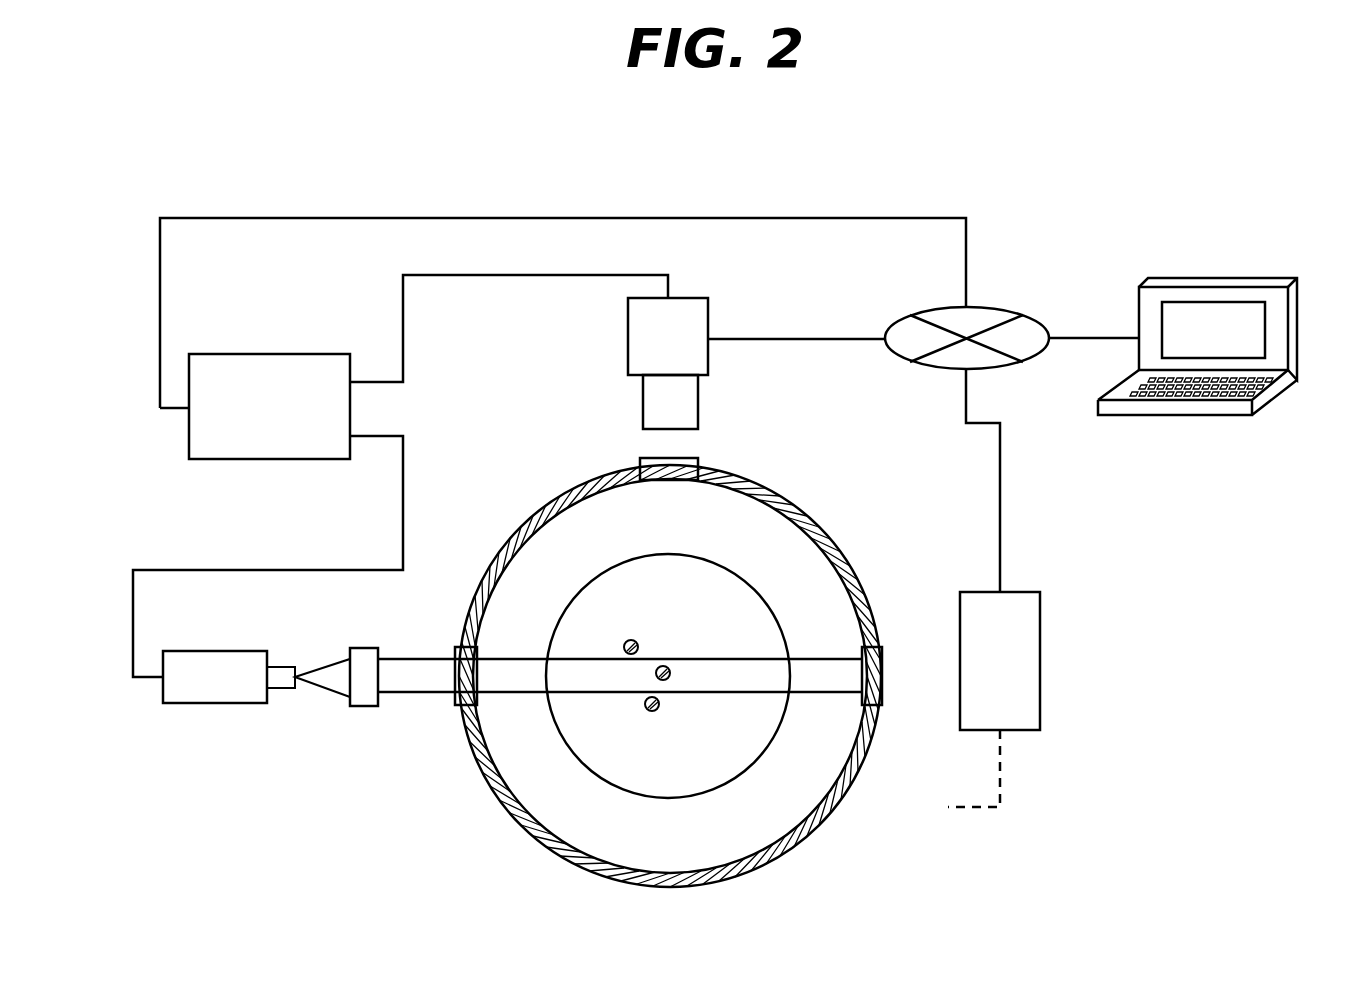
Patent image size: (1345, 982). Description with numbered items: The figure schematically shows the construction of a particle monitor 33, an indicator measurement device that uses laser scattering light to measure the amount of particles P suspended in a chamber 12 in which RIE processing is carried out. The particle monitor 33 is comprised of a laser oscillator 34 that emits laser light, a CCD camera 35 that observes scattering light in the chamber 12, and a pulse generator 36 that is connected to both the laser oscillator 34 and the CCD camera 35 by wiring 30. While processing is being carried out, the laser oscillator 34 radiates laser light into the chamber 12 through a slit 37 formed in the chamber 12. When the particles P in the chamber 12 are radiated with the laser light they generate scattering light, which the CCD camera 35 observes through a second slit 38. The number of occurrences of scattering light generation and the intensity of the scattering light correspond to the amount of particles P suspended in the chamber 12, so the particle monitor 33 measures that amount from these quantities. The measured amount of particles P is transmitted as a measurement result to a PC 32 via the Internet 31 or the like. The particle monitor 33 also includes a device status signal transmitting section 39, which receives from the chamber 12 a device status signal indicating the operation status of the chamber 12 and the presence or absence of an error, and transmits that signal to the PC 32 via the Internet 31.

The chamber 12 is at (820, 827).
The wiring / control line 30 is at (922, 218).
The Internet 31 is at (987, 307).
The PC 32 is at (1275, 395).
The particle monitor 33 is at (630, 141).
The laser oscillator 34 is at (245, 705).
The CCD camera 35 is at (708, 368).
The pulse generator 36 is at (292, 354).
The slit 37 is at (455, 706).
The slit 38 is at (645, 458).
The device status signal transmitting section 39 is at (1040, 685).
The particles P is at (655, 712).